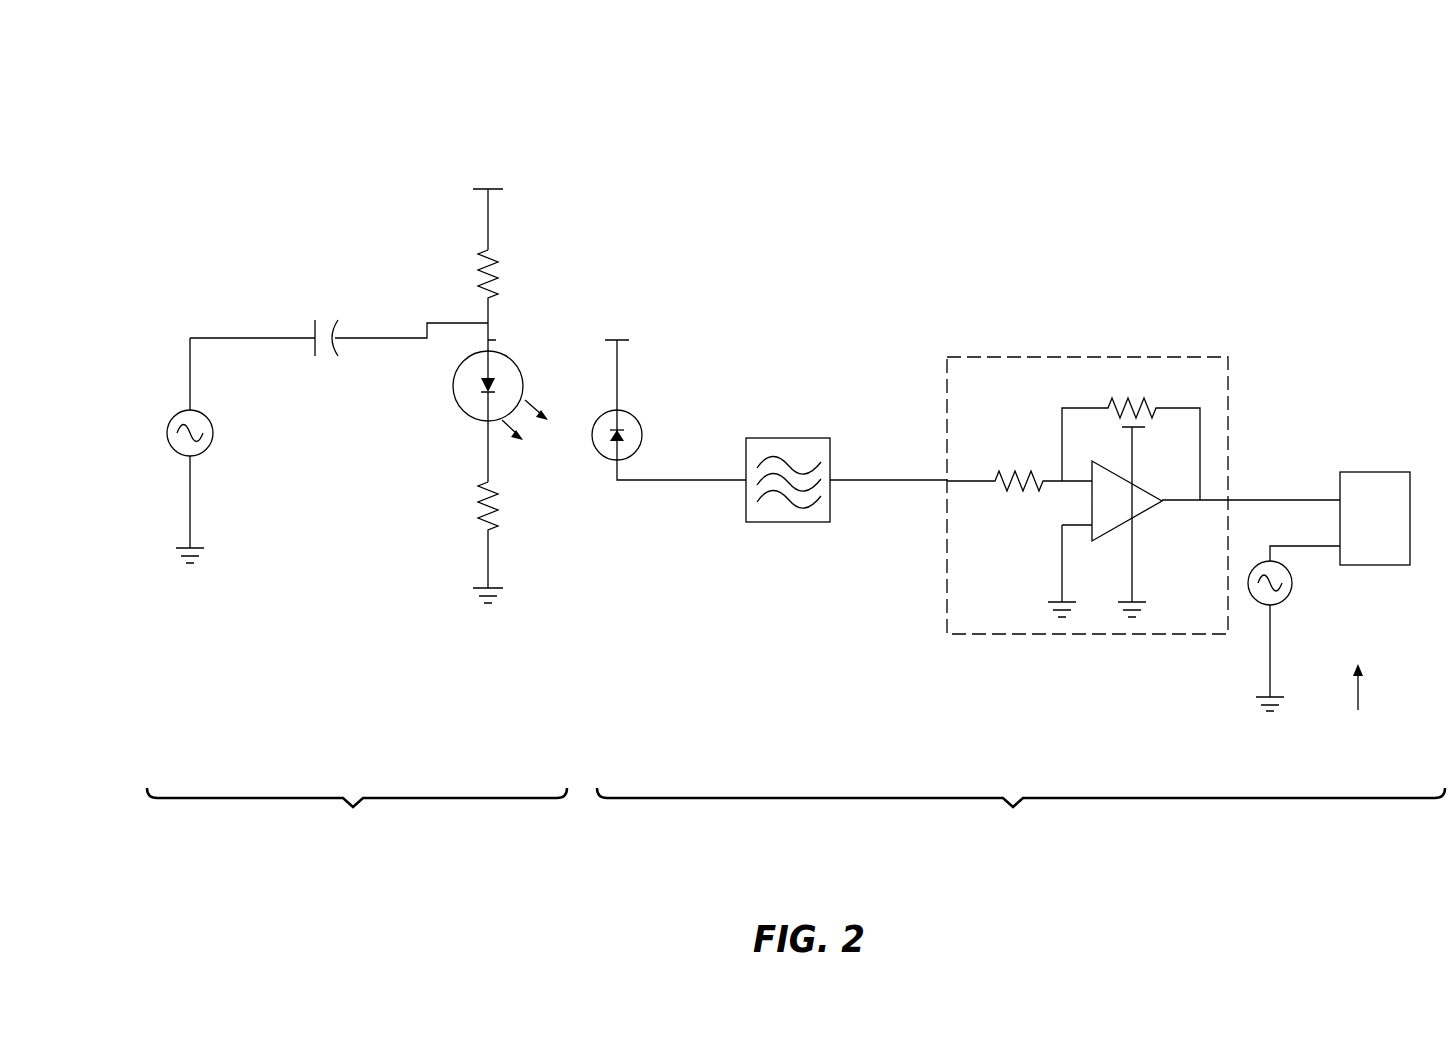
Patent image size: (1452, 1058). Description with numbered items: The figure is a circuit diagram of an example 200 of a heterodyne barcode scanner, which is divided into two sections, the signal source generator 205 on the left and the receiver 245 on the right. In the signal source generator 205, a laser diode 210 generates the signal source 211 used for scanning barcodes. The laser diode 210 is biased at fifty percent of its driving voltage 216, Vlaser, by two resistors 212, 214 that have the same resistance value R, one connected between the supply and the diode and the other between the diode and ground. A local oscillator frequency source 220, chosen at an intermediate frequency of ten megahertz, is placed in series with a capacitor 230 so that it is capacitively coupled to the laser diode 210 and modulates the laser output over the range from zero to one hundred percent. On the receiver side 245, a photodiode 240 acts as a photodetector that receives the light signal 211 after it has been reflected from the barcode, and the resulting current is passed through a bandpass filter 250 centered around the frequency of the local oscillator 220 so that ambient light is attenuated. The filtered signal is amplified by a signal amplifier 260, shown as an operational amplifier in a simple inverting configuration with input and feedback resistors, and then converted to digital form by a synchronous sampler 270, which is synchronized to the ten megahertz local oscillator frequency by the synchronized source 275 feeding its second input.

The heterodyne barcode scanner implementation 200 is at (1190, 144).
The signal source generator 205 is at (357, 831).
The laser diode 210 is at (517, 347).
The signal source / reflected light signal 211 is at (515, 452).
The resistor 212 is at (497, 527).
The resistor 214 is at (498, 260).
The driving voltage Vlaser 216 is at (498, 150).
The local oscillator frequency source 220 is at (218, 428).
The capacitor 230 is at (302, 310).
The photodiode 240 is at (628, 410).
The receiver 245 is at (1021, 831).
The bandpass filter 250 is at (778, 430).
The signal amplifier 260 is at (1077, 355).
The synchronous sampler 270 is at (1372, 410).
The oscillator synchronized to local oscillator 275 is at (1288, 602).